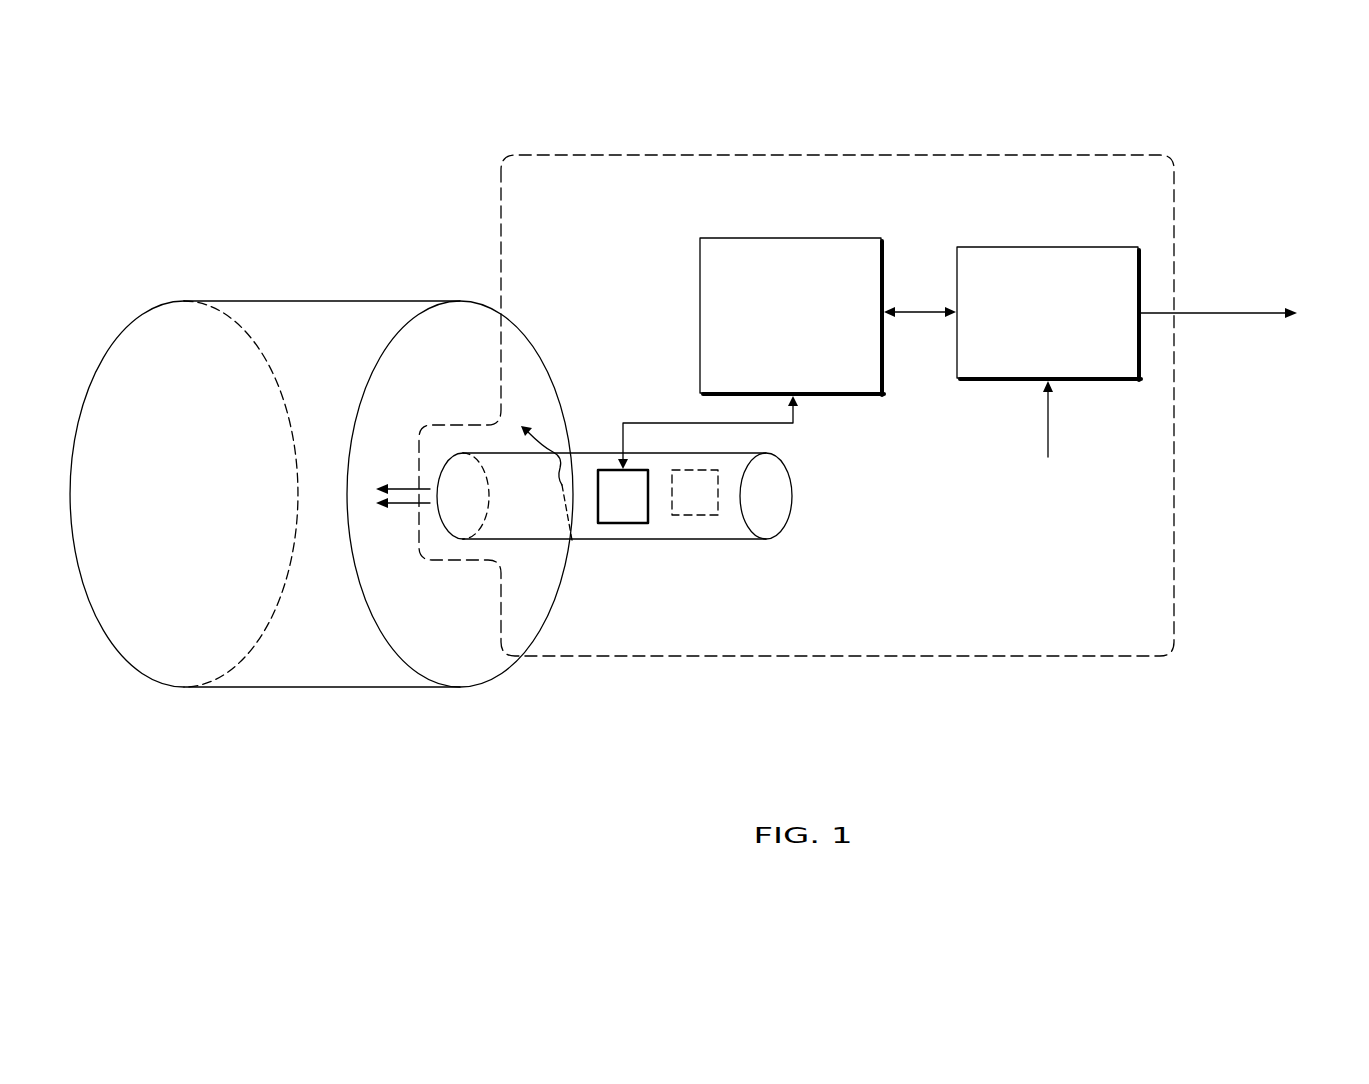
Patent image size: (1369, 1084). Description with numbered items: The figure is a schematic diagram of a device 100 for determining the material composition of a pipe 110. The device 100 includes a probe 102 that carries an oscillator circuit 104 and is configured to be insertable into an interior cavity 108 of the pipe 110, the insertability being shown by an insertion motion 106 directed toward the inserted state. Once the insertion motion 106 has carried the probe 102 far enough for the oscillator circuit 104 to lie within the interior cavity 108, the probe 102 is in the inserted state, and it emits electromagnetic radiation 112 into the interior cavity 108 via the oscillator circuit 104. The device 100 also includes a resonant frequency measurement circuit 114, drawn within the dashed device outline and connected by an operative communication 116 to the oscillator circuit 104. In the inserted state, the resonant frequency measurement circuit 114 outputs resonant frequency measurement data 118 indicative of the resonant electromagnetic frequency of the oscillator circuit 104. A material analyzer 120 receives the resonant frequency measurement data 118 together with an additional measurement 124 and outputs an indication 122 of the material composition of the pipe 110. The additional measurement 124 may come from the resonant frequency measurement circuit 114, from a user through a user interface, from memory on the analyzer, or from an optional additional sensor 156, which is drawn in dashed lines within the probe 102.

The device 100 is at (988, 657).
The probe 102 is at (748, 540).
The oscillator circuit 104 is at (623, 523).
The insertion motion 106 is at (407, 510).
The interior cavity 108 is at (452, 348).
The pipe 110 is at (323, 301).
The electromagnetic radiation 112 is at (572, 540).
The resonant frequency measurement circuit 114 is at (773, 376).
The operative communication 116 is at (647, 423).
The resonant frequency measurement data 118 is at (917, 312).
The material analyzer 120 is at (1030, 345).
The indication of material composition 122 is at (1257, 313).
The additional measurement 124 is at (1047, 459).
The optional additional sensor 156 is at (718, 468).